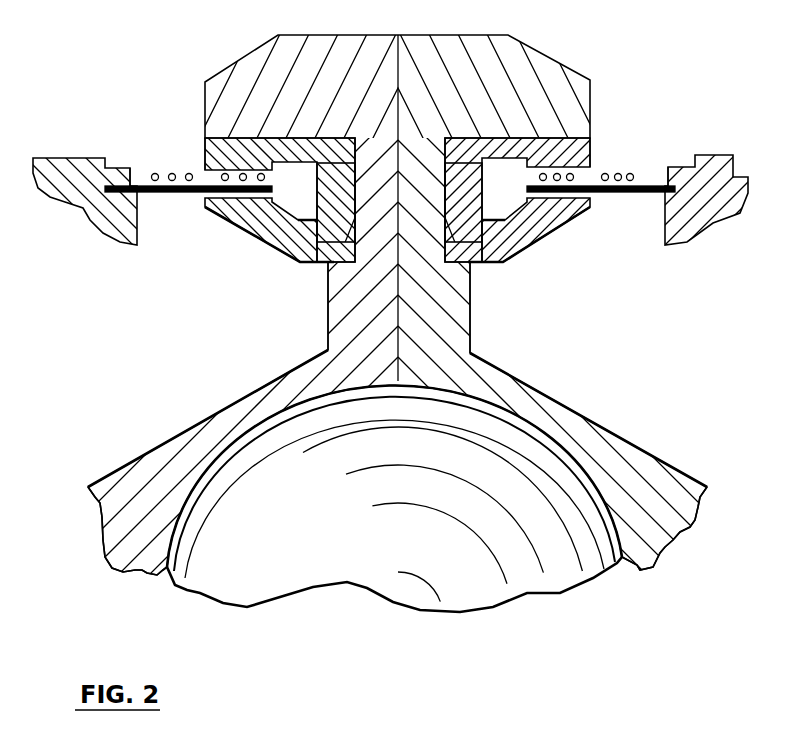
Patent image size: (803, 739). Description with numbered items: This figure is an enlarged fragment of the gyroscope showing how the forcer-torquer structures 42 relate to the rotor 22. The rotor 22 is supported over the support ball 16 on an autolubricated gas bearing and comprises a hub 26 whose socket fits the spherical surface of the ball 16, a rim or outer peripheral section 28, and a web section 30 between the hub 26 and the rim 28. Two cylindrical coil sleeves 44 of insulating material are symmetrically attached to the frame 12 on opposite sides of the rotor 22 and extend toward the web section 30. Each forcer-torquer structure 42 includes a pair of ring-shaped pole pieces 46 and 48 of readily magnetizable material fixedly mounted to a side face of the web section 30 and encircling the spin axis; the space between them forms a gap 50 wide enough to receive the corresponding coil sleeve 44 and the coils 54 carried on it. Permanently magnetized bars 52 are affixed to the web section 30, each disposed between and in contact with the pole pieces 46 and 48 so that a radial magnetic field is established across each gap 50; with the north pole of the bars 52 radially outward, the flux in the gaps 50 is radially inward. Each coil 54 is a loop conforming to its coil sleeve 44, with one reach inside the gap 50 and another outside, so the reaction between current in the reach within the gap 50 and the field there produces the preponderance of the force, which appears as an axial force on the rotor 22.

The frame 12 is at (93, 195).
The support ball 16 is at (410, 538).
The rotor 22 is at (668, 523).
The hub 26 is at (132, 514).
The rim 28 is at (298, 98).
The web section 30 is at (380, 295).
The forcer-torquer structure 42 is at (165, 132).
The coil sleeve 44 is at (188, 193).
The pole piece 46 is at (245, 157).
The pole piece 48 is at (270, 219).
The gap 50 is at (202, 177).
The permanently magnetized bar 52 is at (322, 212).
The coil 54 is at (153, 175).